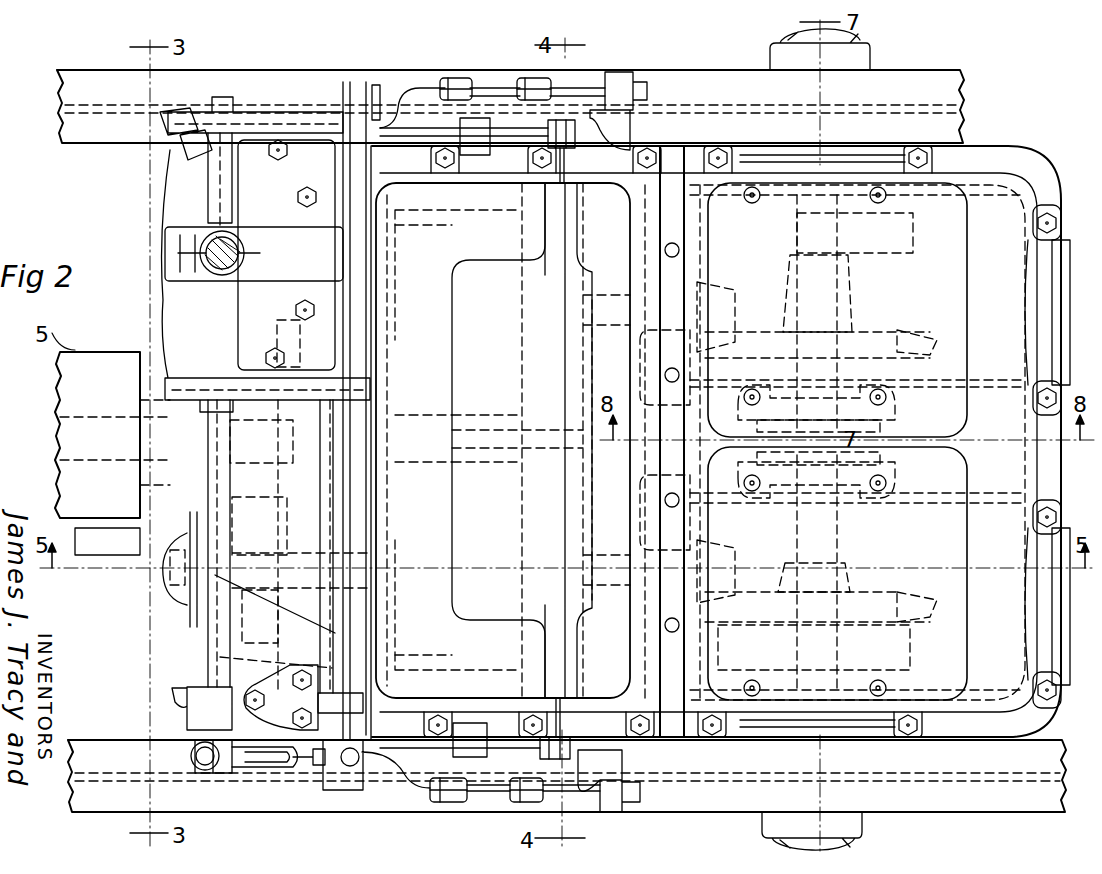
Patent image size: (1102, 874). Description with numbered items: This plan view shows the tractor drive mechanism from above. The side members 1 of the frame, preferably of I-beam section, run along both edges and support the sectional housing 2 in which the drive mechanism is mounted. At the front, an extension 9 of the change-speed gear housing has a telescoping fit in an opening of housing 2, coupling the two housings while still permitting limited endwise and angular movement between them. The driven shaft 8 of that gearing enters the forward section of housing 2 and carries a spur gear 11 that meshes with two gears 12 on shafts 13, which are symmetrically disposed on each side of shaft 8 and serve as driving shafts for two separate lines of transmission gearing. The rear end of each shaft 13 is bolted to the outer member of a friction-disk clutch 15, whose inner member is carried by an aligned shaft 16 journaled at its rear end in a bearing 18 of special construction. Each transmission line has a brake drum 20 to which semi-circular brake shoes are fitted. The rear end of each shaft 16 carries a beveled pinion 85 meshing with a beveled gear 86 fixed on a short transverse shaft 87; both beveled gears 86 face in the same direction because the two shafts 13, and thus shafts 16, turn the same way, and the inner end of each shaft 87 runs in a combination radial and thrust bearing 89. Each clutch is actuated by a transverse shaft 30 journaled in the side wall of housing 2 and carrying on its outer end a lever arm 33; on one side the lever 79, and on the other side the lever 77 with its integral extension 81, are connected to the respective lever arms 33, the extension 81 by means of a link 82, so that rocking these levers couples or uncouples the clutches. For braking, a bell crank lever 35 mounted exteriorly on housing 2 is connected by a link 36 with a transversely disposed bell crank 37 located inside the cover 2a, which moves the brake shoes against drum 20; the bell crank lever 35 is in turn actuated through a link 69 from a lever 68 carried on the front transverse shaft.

The side members 1 is at (98, 144).
The sectional housing 2 is at (620, 170).
The cover 2a is at (452, 618).
The driven shaft 8 is at (122, 458).
The extension 9 is at (170, 500).
The spur gear 11 is at (270, 546).
The gears 12 is at (280, 540).
The shafts 13 is at (300, 600).
The clutch 15 is at (490, 690).
The shaft 16 is at (605, 295).
The bearing 18 is at (650, 350).
The brake drum 20 is at (522, 425).
The transverse shaft 30 is at (622, 78).
The lever arm 33 is at (576, 88).
The bell crank lever 35 is at (515, 130).
The link 36 is at (550, 447).
The bell crank 37 is at (568, 160).
The lever 68 is at (240, 770).
The link 69 is at (312, 765).
The lever 77 is at (250, 110).
The lever 79 is at (382, 792).
The extension 81 is at (392, 110).
The link 82 is at (486, 82).
The beveled pinion 85 is at (733, 433).
The beveled gear 86 is at (912, 336).
The short transverse shaft 87 is at (855, 305).
The combination radial and thrust bearing 89 is at (890, 416).